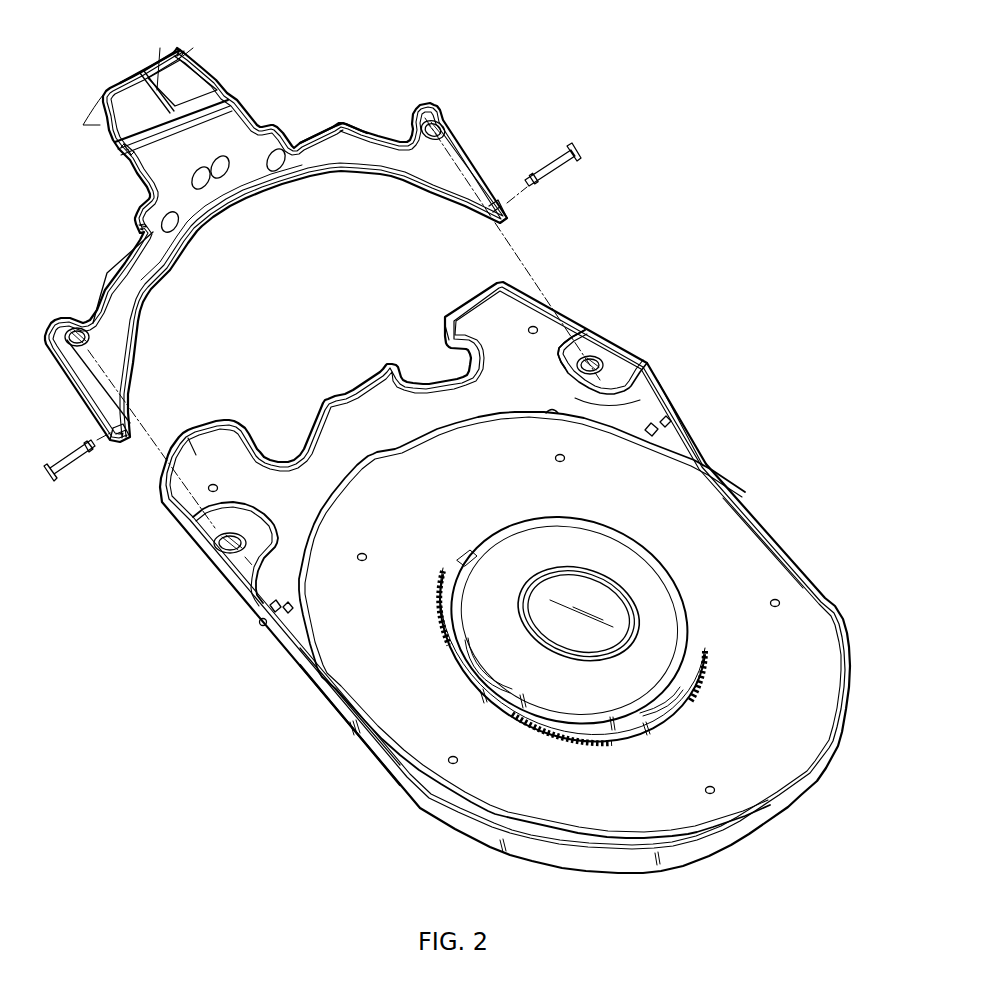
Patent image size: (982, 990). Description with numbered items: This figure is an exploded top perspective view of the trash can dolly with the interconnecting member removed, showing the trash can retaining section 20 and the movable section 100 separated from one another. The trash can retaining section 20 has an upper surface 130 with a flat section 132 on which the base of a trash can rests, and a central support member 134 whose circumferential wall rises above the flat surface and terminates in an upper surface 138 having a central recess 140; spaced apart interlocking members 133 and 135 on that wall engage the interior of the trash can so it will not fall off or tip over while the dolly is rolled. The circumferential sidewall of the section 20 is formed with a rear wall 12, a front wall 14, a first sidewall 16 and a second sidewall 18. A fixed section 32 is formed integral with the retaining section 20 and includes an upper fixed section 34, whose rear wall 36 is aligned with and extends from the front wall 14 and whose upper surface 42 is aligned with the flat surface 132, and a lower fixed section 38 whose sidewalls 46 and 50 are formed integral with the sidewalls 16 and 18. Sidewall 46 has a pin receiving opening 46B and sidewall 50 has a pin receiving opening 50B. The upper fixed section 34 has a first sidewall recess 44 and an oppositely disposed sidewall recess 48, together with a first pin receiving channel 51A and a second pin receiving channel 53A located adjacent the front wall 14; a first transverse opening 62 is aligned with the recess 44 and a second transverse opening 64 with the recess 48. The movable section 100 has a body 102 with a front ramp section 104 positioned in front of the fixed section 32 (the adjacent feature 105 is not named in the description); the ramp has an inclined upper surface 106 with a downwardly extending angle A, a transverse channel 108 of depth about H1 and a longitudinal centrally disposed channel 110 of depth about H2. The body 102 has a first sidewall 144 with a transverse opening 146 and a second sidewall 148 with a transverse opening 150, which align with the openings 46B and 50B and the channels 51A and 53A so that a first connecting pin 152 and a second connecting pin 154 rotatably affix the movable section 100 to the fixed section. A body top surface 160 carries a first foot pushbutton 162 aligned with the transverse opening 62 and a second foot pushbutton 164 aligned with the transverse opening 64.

The rear wall 12 is at (763, 827).
The front wall 14 is at (507, 413).
The first sidewall 16 is at (760, 508).
The second sidewall 18 is at (363, 738).
The trash can retaining section 20 is at (732, 870).
The fixed section 32 is at (597, 322).
The upper fixed section 34 is at (610, 407).
The rear wall 36 is at (550, 412).
The lower fixed section 38 is at (593, 340).
The upper surface 42 is at (413, 424).
The first sidewall recess 44 is at (573, 340).
The sidewall 46 is at (633, 383).
The pin receiving opening 46B is at (663, 418).
The sidewall recess 48 is at (247, 517).
The sidewall 50 is at (280, 637).
The pin receiving opening 50B is at (257, 620).
The first pin receiving channel 51A is at (653, 430).
The second pin receiving channel 53A is at (262, 603).
The first transverse opening 62 is at (603, 367).
The second transverse opening 64 is at (227, 550).
The movable section 100 is at (463, 142).
The body 102 is at (380, 130).
The front ramp section 104 is at (213, 72).
The hump 105 is at (348, 115).
The inclined upper surface 106 is at (178, 57).
The transverse channel 108 is at (222, 97).
The longitudinal centrally disposed channel 110 is at (152, 86).
The upper surface 130 is at (807, 613).
The flat section 132 is at (777, 767).
The interlocking member 133 is at (480, 678).
The central support member 134 is at (607, 450).
The interlocking member 135 is at (640, 713).
The upper surface 138 is at (685, 637).
The central recess 140 is at (605, 647).
The first sidewall 144 is at (530, 180).
The transverse opening 146 is at (507, 215).
The second sidewall 148 is at (79, 389).
The transverse opening 150 is at (127, 440).
The first connecting pin 152 is at (572, 172).
The second connecting pin 154 is at (67, 470).
The body top surface 160 is at (123, 270).
The first foot pushbutton 162 is at (437, 121).
The second foot pushbutton 164 is at (80, 326).
The angle A is at (86, 110).
The depth H1 is at (124, 152).
The depth H2 is at (185, 60).